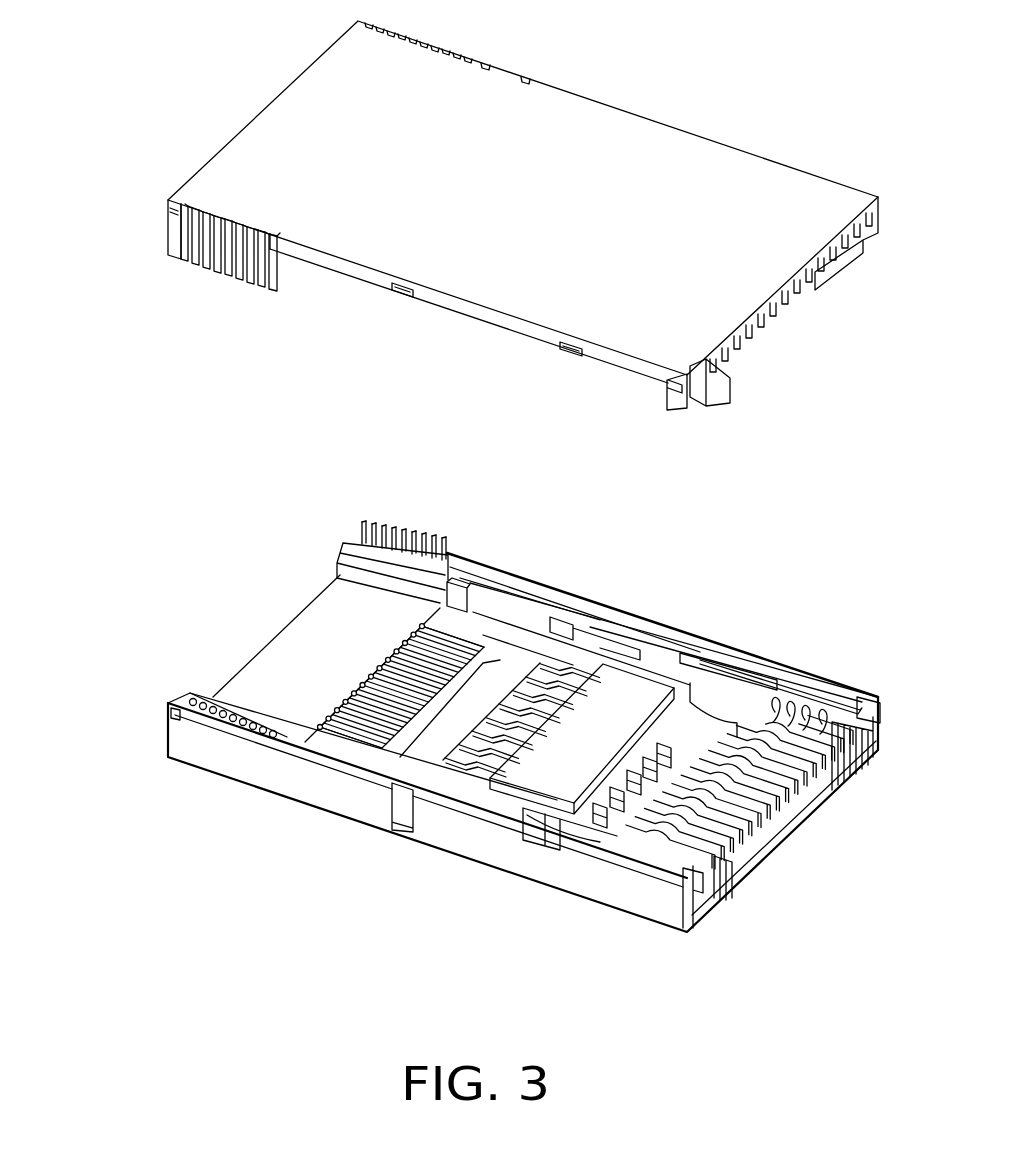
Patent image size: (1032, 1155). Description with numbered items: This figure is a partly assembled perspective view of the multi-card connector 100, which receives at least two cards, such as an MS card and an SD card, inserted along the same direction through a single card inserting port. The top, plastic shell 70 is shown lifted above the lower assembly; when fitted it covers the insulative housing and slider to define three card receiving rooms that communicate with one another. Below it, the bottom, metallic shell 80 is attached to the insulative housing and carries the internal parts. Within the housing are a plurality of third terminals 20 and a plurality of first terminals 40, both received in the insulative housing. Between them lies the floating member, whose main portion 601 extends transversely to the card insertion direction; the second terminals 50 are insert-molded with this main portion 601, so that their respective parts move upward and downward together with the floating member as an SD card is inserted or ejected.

The N-in-1 card connector 100 is at (153, 144).
The top shell 70 is at (633, 97).
The bottom shell 80 is at (312, 775).
The third terminals 20 is at (487, 693).
The main portion 601 is at (486, 695).
The second terminals 50 is at (580, 672).
The first terminals 40 is at (737, 737).